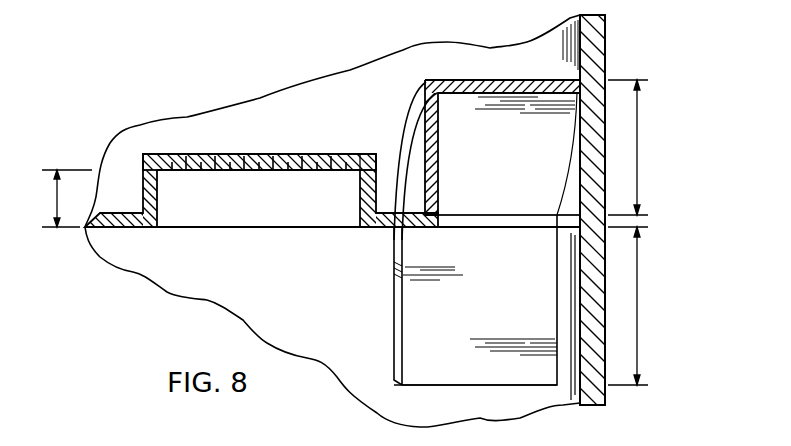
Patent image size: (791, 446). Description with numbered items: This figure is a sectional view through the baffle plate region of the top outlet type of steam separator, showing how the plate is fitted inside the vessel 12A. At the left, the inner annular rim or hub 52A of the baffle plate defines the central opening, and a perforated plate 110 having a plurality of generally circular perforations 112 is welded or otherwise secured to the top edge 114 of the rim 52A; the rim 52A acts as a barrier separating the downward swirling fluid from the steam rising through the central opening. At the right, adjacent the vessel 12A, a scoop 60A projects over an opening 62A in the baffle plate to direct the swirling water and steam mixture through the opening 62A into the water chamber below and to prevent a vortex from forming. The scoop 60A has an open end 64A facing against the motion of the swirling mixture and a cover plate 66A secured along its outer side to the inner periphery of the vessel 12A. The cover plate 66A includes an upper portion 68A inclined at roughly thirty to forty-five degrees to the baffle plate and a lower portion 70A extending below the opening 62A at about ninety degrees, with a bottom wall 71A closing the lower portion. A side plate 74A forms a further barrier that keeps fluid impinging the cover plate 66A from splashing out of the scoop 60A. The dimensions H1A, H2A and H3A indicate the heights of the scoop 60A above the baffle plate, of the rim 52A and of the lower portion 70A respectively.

The vessel 12A is at (598, 52).
The rim 52A is at (143, 193).
The scoop 60A is at (444, 141).
The opening 62A is at (484, 224).
The open end 64A is at (541, 196).
The cover plate 66A is at (500, 79).
The upper portion 68A is at (546, 85).
The lower portion 70A is at (454, 319).
The bottom wall 71A is at (485, 387).
The side plate 74A is at (432, 143).
The perforated plate 110 is at (150, 158).
The perforations 112 is at (212, 154).
The top edge 114 is at (363, 154).
The height dimension H1A is at (632, 147).
The height dimension H2A is at (65, 198).
The height dimension H3A is at (636, 306).